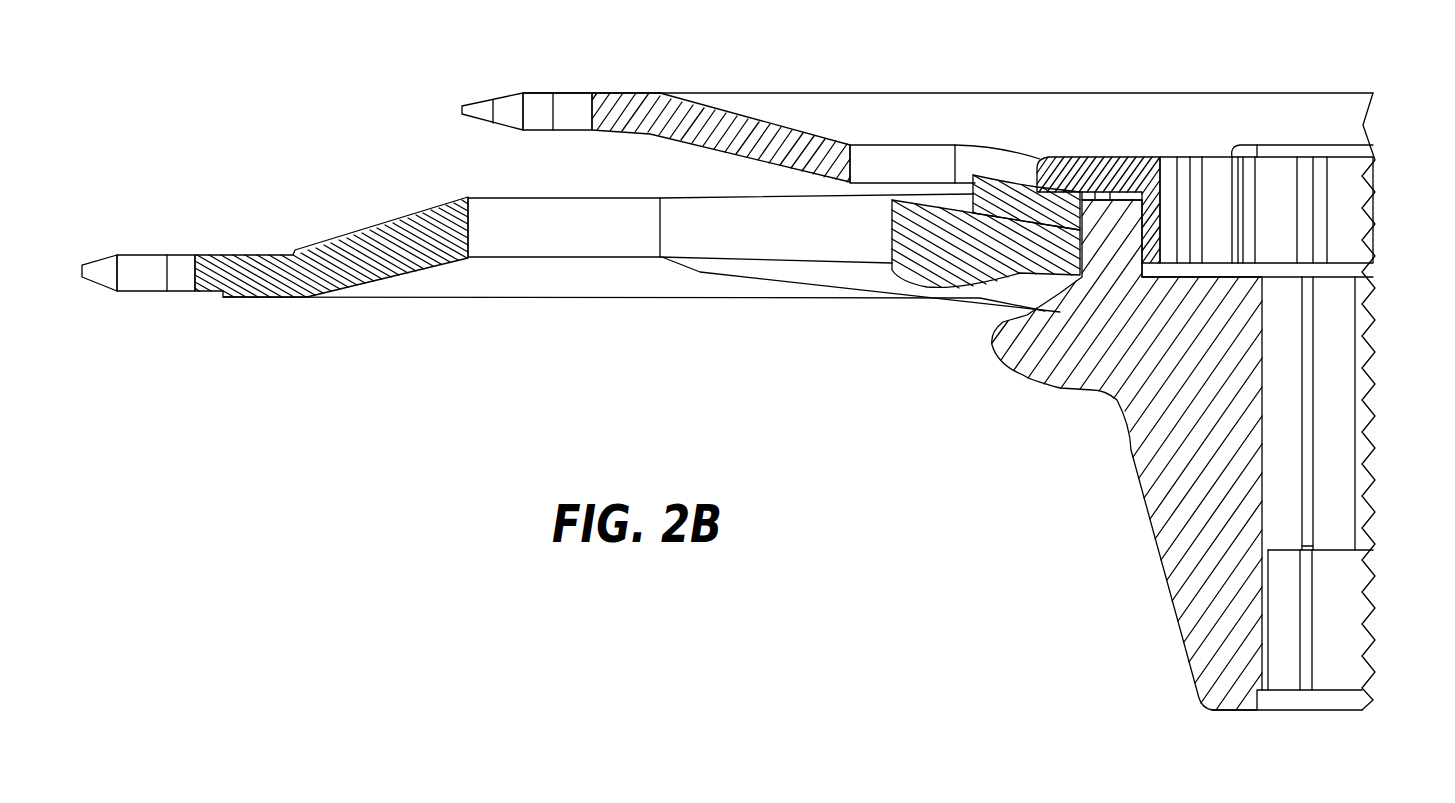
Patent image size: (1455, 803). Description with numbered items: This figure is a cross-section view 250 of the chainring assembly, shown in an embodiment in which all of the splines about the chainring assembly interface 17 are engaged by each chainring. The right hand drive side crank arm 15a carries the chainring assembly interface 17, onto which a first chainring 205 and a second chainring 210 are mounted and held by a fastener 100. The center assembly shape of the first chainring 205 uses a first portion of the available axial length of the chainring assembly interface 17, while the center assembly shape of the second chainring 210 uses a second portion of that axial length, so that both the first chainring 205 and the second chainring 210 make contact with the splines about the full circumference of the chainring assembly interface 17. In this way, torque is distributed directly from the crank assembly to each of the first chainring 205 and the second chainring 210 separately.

The cross-section view 250 is at (241, 66).
The first chainring 205 is at (207, 296).
The second chainring 210 is at (570, 92).
The fastener 100 is at (1355, 213).
The chainring assembly interface 17 is at (1012, 376).
The right hand drive side crank arm 15a is at (1365, 608).